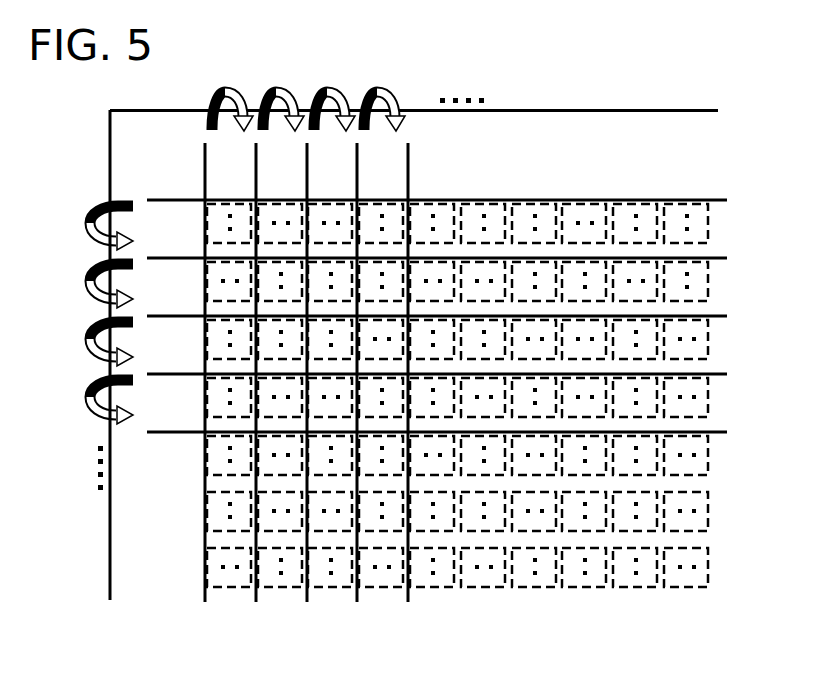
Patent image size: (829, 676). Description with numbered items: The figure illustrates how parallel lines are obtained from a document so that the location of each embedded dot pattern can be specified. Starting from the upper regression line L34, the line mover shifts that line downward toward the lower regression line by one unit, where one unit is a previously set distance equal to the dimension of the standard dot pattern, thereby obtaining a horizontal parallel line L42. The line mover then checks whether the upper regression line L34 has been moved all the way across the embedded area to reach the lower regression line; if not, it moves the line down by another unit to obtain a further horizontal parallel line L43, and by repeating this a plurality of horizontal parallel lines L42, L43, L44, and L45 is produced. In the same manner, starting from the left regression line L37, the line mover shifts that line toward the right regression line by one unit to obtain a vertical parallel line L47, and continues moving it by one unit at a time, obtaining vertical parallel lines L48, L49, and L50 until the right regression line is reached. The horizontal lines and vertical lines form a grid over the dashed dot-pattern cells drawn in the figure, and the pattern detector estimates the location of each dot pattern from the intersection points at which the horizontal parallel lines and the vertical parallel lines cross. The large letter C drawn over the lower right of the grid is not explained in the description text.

The upper regression line L34 is at (459, 203).
The horizontal parallel line L42 is at (459, 261).
The horizontal parallel line L43 is at (459, 319).
The horizontal parallel line L44 is at (459, 377).
The horizontal parallel line L45 is at (459, 435).
The left regression line L37 is at (204, 390).
The vertical parallel line L47 is at (256, 390).
The vertical parallel line L48 is at (306, 390).
The vertical parallel line L49 is at (356, 390).
The vertical parallel line L50 is at (407, 390).
The cell region C is at (673, 476).